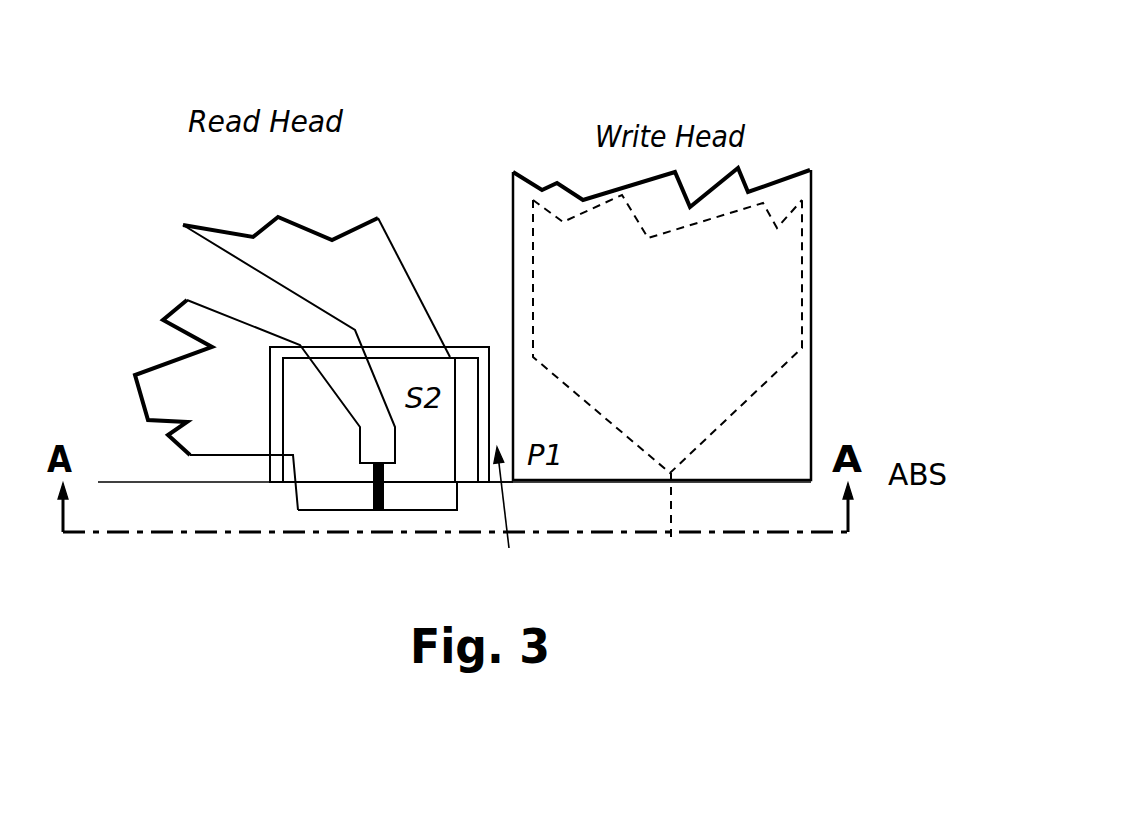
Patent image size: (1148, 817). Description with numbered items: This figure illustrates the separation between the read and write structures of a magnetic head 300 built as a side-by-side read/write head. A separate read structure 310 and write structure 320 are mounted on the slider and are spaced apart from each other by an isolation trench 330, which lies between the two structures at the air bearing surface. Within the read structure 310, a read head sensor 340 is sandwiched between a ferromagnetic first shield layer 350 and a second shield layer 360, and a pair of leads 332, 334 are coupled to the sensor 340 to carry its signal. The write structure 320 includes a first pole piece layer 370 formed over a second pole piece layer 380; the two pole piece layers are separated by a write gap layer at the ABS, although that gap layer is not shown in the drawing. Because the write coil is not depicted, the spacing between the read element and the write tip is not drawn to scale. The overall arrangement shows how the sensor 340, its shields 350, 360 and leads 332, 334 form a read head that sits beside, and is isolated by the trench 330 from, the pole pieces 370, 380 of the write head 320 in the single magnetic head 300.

The magnetic head 300 is at (726, 80).
The read structure 310 is at (162, 216).
The write structure 320 is at (560, 163).
The isolation trench 330 is at (395, 562).
The lead 332 is at (355, 242).
The lead 334 is at (192, 320).
The read head sensor 340 is at (378, 511).
The first shield layer 350 is at (272, 417).
The second shield layer 360 is at (465, 357).
The first pole piece layer 370 is at (812, 410).
The second pole piece layer 380 is at (790, 285).